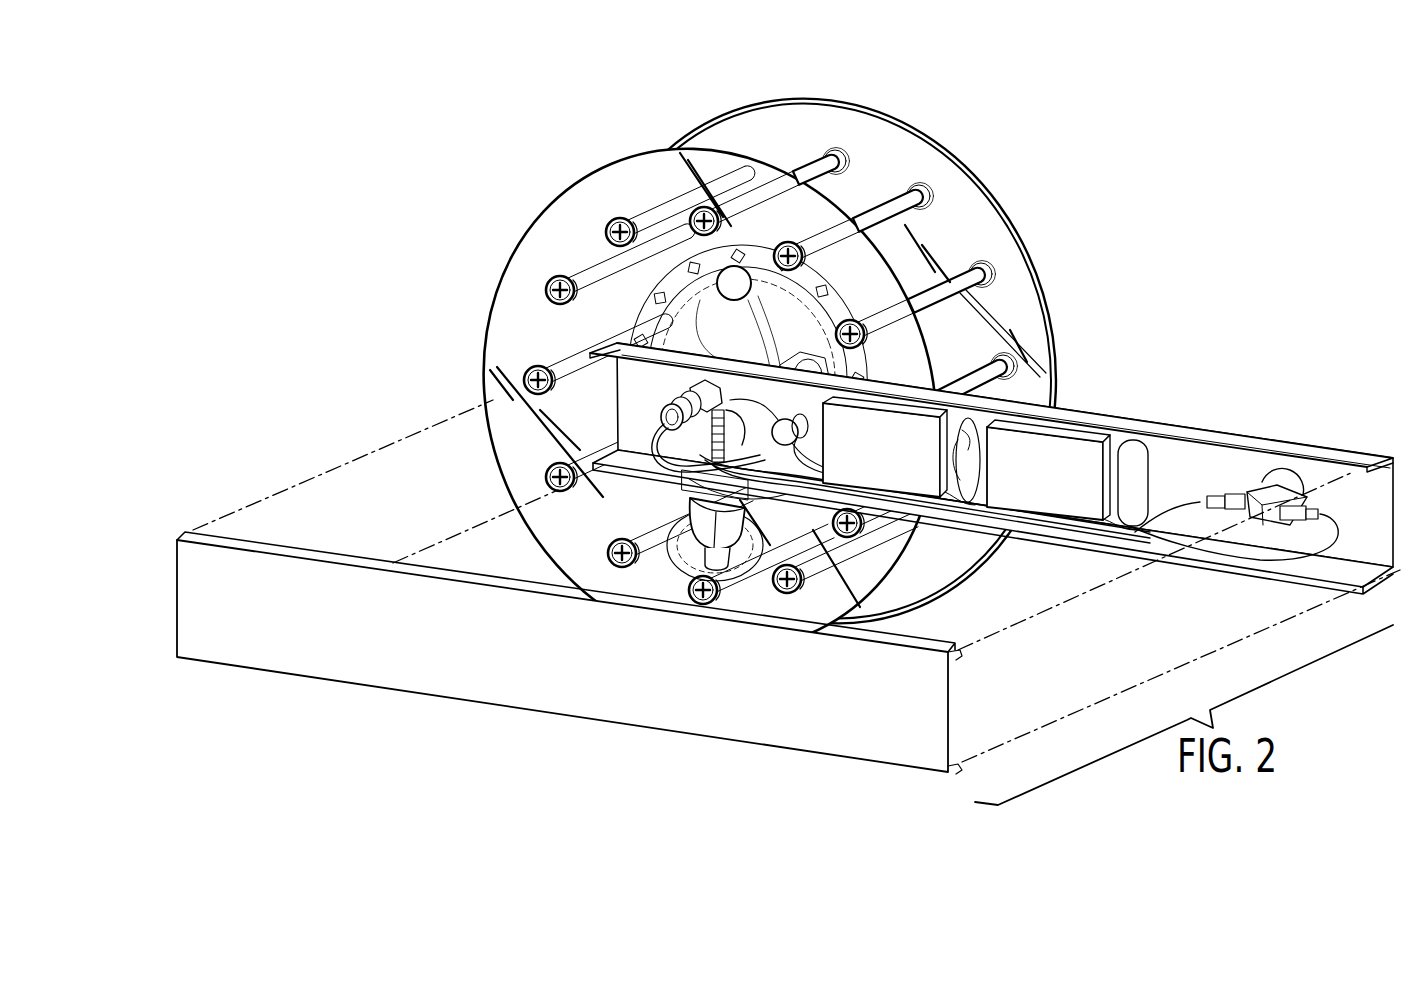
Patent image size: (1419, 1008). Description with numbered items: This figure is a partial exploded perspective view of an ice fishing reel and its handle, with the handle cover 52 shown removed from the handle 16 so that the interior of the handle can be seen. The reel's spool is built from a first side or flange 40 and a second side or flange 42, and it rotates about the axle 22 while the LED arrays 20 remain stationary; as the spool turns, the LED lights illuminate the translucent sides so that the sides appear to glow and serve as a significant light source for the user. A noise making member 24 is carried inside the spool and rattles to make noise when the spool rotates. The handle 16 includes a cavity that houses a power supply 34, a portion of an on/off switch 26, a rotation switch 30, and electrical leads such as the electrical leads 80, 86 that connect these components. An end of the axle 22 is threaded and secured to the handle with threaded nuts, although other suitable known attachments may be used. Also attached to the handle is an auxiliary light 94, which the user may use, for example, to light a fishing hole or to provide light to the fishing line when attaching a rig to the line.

The handle 16 is at (1180, 430).
The LED arrays 20 is at (652, 296).
The axle 22 is at (662, 404).
The noise making member 24 is at (663, 563).
The on/off switch 26 is at (1283, 477).
The rotation switch 30 is at (818, 426).
The power supply 34 is at (985, 461).
The first side or flange 40 is at (558, 225).
The second side or flange 42 is at (993, 243).
The handle cover 52 is at (470, 678).
The electrical lead 80 is at (660, 440).
The electrical lead 86 is at (1040, 530).
The auxiliary light 94 is at (747, 560).